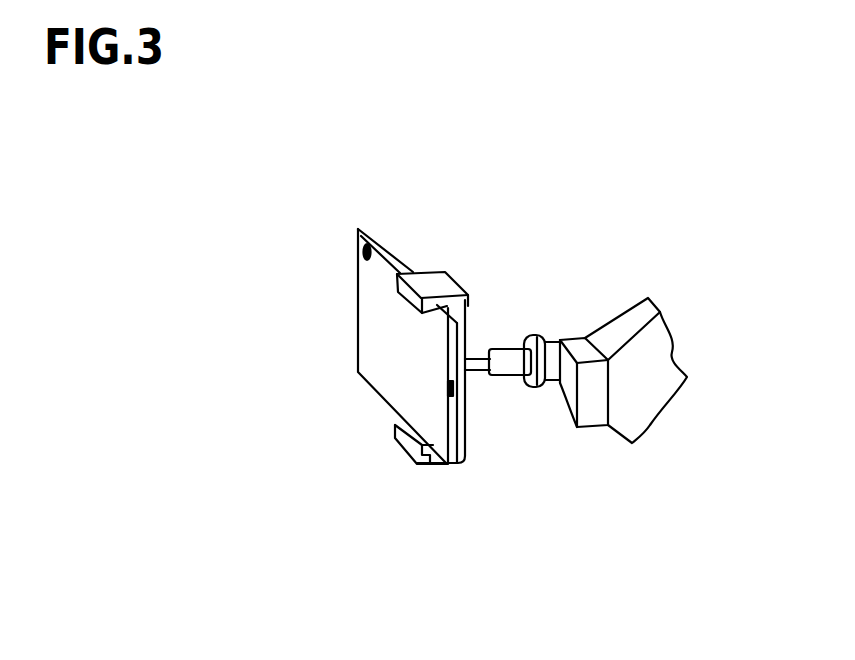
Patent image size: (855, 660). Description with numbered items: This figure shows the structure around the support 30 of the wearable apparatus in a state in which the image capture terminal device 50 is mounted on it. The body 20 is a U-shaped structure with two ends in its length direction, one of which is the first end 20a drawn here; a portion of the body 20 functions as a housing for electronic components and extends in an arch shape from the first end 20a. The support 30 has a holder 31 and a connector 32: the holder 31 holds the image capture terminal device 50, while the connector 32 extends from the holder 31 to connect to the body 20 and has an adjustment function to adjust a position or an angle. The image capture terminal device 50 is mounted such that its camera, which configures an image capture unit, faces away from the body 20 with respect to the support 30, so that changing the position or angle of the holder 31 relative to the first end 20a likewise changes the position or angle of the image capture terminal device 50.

The image capture terminal device 50 is at (393, 254).
The support 30 is at (513, 296).
The holder 31 is at (470, 304).
The connector 32 is at (509, 339).
The first end 20a is at (608, 378).
The body 20 is at (645, 348).